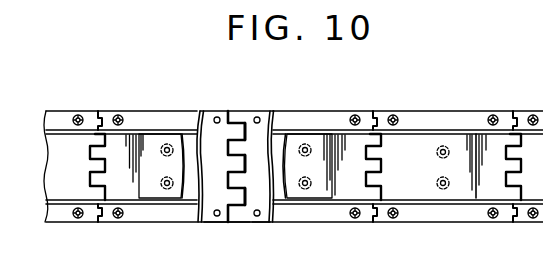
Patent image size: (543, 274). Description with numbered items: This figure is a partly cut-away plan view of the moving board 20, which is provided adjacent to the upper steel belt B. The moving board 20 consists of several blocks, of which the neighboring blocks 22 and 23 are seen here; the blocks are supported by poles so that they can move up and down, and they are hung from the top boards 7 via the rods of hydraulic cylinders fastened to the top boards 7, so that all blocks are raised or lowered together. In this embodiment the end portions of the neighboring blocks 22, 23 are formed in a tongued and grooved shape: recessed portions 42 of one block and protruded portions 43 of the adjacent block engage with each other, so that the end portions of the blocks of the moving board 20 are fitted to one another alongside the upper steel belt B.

The upper steel belt B is at (136, 134).
The top board 7 is at (188, 131).
The moving board 20 is at (226, 225).
The block 22 is at (236, 174).
The block 23 is at (264, 215).
The recessed portion 42 is at (237, 154).
The protruded portion 43 is at (235, 155).